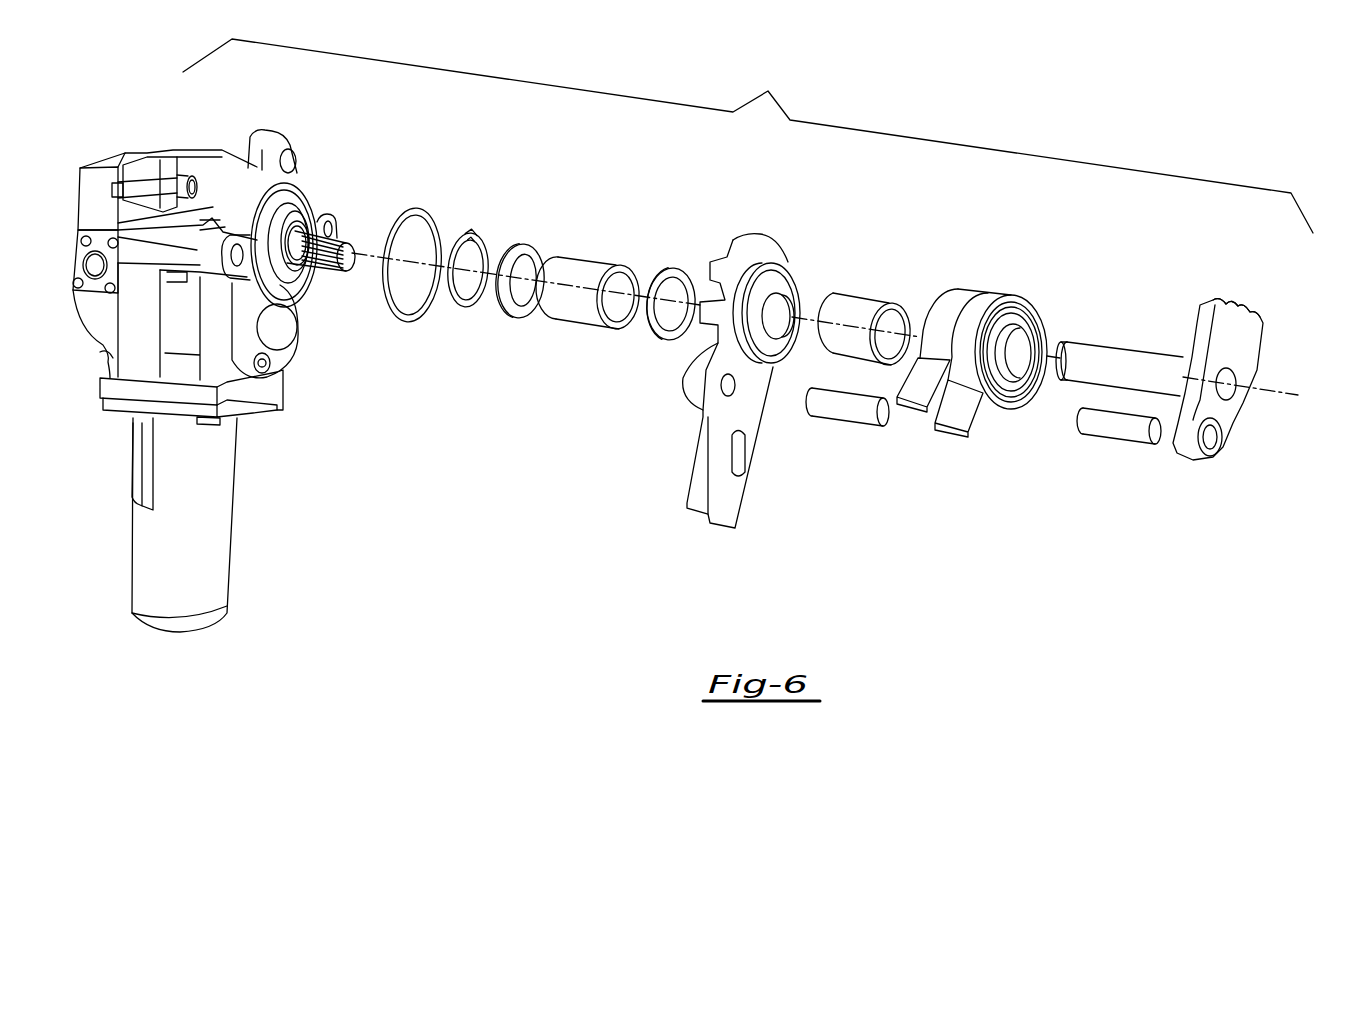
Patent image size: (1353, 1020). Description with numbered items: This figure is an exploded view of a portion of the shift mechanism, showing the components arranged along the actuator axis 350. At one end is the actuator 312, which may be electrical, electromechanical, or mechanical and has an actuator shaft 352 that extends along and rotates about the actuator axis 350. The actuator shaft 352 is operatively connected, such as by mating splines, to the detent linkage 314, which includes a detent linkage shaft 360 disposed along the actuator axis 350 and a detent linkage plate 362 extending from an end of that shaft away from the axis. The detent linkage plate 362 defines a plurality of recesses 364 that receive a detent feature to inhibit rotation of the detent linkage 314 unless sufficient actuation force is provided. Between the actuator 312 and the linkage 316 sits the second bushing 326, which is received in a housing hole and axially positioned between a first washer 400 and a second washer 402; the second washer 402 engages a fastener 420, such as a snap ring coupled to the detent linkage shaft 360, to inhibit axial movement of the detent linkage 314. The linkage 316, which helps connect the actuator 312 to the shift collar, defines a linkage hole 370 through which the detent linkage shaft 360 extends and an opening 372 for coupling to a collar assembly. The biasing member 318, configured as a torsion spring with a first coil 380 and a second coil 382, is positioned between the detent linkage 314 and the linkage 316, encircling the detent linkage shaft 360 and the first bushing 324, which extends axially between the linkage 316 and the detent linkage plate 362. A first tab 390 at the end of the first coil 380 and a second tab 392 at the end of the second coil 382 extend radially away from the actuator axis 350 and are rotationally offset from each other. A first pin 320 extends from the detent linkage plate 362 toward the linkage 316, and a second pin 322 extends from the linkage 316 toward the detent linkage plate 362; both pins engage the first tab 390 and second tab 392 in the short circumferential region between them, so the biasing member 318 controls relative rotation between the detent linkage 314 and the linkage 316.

The actuator 312 is at (110, 163).
The actuator shaft 352 is at (370, 212).
The fastener 420 is at (462, 232).
The second washer 402 is at (522, 244).
The second bushing 326 is at (600, 255).
The first washer 400 is at (670, 268).
The linkage 316 is at (777, 242).
The linkage hole 370 is at (779, 308).
The opening 372 is at (707, 515).
The first bushing 324 is at (863, 293).
The second pin 322 is at (867, 427).
The first coil 380 is at (970, 360).
The biasing member 318 is at (985, 294).
The second coil 382 is at (1008, 292).
The first tab 390 is at (910, 410).
The second tab 392 is at (952, 438).
The detent linkage shaft 360 is at (1137, 347).
The first pin 320 is at (1107, 433).
The detent linkage 314 is at (1252, 351).
The detent linkage plate 362 is at (1247, 356).
The recesses 364 is at (1257, 317).
The actuator axis 350 is at (1278, 390).